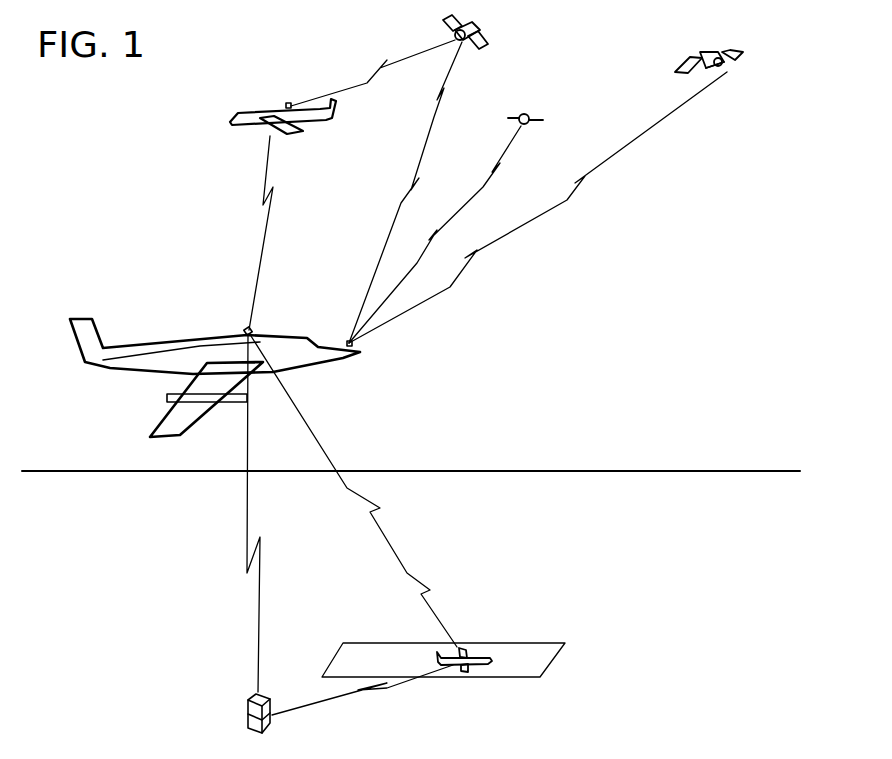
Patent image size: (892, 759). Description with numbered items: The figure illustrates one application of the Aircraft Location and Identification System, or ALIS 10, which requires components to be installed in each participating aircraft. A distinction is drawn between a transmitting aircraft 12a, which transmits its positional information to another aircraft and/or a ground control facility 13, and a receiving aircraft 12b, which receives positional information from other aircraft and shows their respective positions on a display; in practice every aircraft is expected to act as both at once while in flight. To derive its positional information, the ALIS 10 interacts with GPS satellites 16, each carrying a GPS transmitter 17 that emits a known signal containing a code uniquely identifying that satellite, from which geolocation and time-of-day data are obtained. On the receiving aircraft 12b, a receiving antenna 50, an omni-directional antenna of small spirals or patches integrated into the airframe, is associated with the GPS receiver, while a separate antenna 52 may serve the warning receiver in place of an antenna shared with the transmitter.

The Aircraft Location and Identification System (ALIS) 10 is at (668, 308).
The transmitting aircraft 12a is at (252, 112).
The receiving aircraft 12b is at (318, 372).
The ground control facility 13 is at (247, 707).
The GPS satellites 16 is at (485, 34).
The GPS transmitter 17 is at (723, 65).
The receiving antenna 50 is at (353, 345).
The separate antenna 52 is at (257, 330).